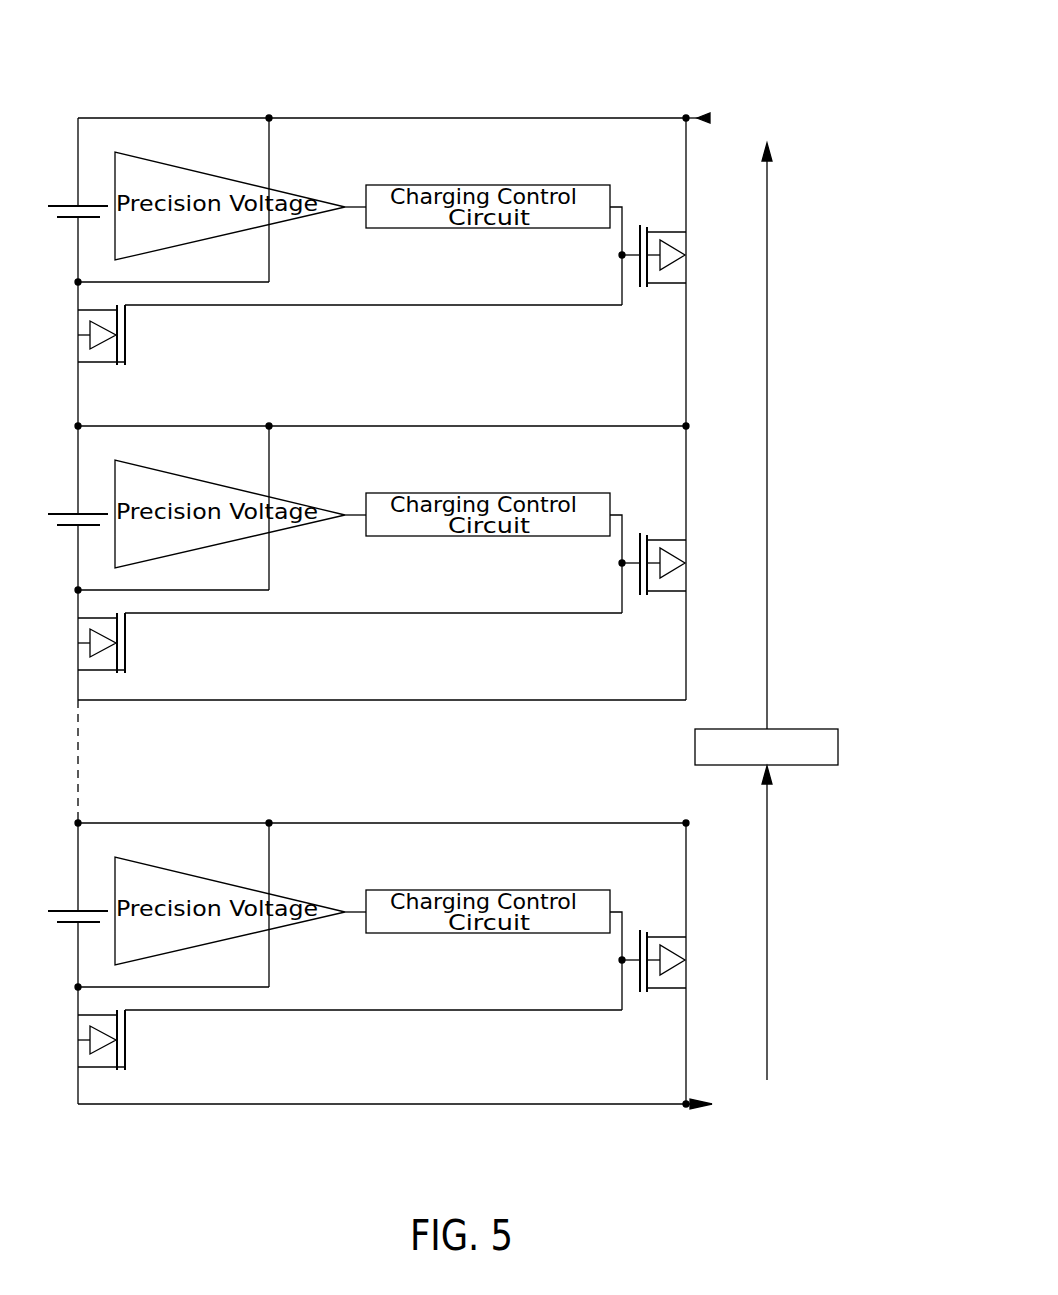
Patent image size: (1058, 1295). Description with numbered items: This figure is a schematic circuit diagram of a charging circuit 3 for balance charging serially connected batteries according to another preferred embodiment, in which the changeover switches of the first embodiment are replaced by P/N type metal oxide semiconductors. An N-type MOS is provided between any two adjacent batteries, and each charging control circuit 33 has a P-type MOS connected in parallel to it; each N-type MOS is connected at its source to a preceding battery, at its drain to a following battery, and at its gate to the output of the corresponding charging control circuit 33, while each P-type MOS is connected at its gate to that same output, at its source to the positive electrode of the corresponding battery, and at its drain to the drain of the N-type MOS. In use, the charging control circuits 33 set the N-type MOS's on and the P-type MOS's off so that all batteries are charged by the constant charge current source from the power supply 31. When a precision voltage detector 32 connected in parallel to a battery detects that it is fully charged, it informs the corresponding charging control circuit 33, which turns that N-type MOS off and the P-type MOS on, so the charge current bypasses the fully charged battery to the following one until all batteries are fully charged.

The charging circuit 3 is at (471, 563).
The power supply 31 is at (788, 728).
The precision voltage detector 32 is at (230, 554).
The charging control circuit 33 is at (515, 546).